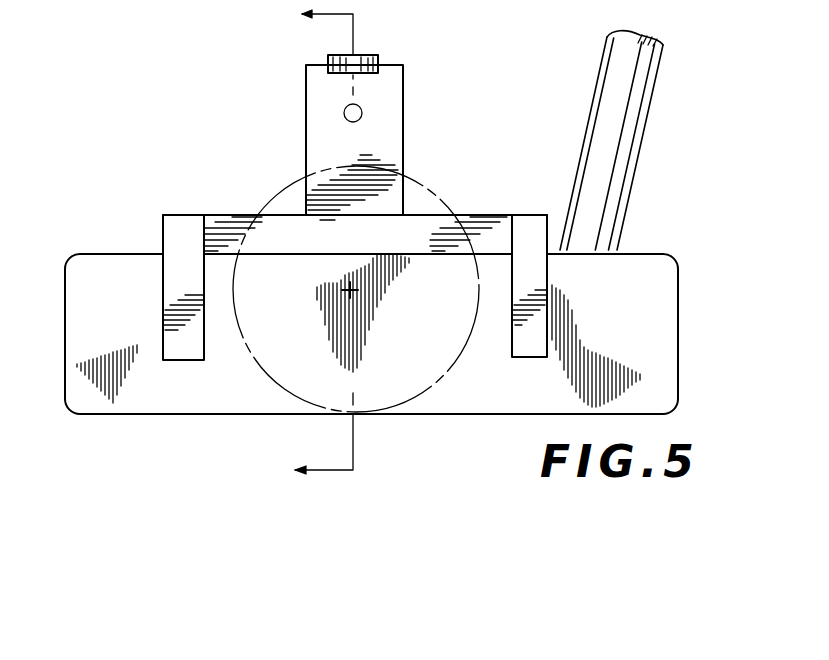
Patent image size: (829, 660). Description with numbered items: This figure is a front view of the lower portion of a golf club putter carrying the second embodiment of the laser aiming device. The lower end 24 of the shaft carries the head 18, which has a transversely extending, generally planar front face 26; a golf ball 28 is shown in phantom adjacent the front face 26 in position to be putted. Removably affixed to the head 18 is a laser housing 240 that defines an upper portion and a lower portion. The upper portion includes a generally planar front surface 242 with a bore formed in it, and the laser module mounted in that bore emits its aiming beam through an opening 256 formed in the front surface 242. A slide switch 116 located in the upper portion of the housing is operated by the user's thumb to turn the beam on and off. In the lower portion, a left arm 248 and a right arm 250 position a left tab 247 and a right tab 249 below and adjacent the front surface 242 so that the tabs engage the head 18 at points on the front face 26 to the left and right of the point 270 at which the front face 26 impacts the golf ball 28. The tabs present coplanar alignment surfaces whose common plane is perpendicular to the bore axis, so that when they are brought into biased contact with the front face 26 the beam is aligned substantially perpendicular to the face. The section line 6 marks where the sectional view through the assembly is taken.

The section line 6 is at (308, 247).
The head 18 is at (678, 334).
The lower end of the shaft 24 is at (622, 144).
The front face 26 is at (655, 397).
The golf ball 28 is at (253, 357).
The slide switch 116 is at (374, 46).
The laser housing 240 is at (306, 86).
The front surface 242 is at (315, 145).
The left tab 247 is at (162, 308).
The left arm 248 is at (230, 214).
The right tab 249 is at (537, 330).
The right arm 250 is at (427, 214).
The opening 256 is at (363, 113).
The point 270 is at (348, 292).